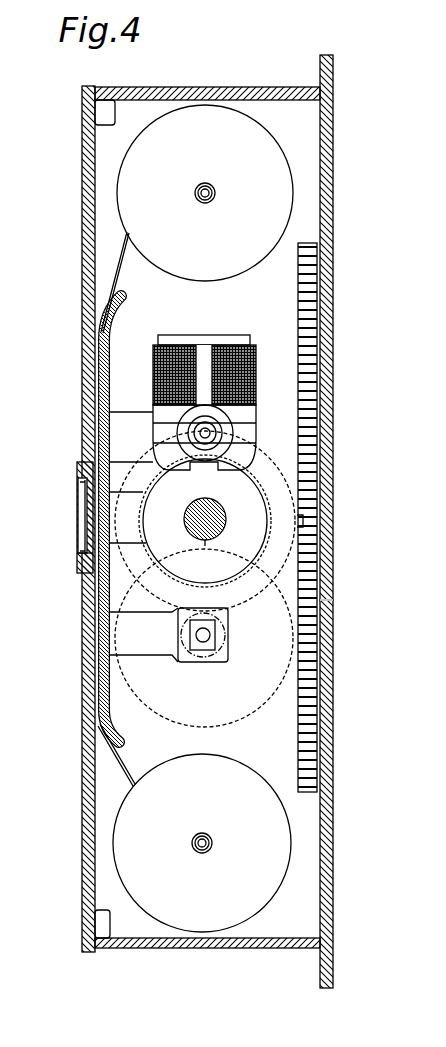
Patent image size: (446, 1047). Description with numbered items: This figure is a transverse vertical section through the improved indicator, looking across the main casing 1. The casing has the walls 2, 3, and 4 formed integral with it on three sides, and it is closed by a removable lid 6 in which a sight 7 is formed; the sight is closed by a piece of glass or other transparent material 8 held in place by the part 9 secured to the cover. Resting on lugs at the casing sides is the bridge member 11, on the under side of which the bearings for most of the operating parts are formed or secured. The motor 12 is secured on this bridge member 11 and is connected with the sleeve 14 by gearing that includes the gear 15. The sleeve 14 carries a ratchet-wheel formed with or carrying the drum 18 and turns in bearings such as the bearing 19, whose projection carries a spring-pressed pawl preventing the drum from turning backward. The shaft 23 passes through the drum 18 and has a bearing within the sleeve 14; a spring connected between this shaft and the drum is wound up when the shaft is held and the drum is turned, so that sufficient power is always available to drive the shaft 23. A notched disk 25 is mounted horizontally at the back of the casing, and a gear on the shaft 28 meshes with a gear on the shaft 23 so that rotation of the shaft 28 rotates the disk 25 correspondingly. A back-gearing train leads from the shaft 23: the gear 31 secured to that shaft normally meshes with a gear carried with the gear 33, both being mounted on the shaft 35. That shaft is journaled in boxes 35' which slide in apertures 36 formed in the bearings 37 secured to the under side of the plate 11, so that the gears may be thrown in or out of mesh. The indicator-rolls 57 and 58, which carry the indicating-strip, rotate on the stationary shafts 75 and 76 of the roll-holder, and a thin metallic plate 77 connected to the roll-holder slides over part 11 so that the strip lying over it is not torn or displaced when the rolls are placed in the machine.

The main casing 1 is at (333, 68).
The wall 2 is at (233, 96).
The wall 3 is at (300, 884).
The wall 4 is at (250, 948).
The lid 6 is at (82, 180).
The sight 7 is at (88, 513).
The transparent material 8 is at (84, 530).
The retaining part 9 is at (80, 557).
The bridge member 11 is at (100, 689).
The motor 12 is at (250, 345).
The sleeve 14 is at (226, 518).
The gear 15 is at (144, 548).
The drum 18 is at (256, 465).
The bearing 19 is at (190, 521).
The shaft 23 is at (205, 528).
The notched disk 25 is at (300, 731).
The shaft 28 is at (303, 519).
The gear 31 is at (257, 453).
The gear 33 is at (204, 638).
The shaft 35 is at (197, 652).
The boxes 35' is at (228, 629).
The apertures 36 is at (217, 652).
The bearings 37 is at (144, 635).
The indicator-roll 57 is at (202, 843).
The indicator-roll 58 is at (205, 193).
The stationary shaft 75 is at (207, 841).
The stationary shaft 76 is at (211, 190).
The thin metallic plate 77 is at (97, 312).